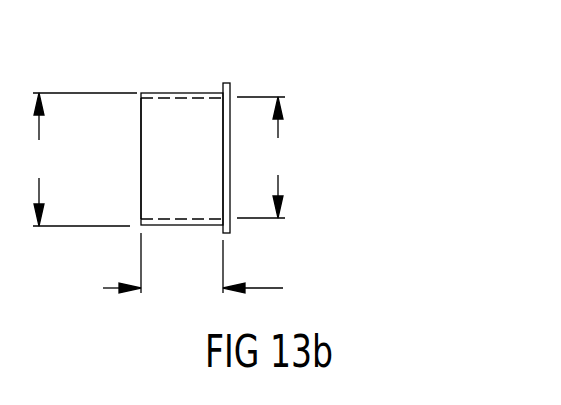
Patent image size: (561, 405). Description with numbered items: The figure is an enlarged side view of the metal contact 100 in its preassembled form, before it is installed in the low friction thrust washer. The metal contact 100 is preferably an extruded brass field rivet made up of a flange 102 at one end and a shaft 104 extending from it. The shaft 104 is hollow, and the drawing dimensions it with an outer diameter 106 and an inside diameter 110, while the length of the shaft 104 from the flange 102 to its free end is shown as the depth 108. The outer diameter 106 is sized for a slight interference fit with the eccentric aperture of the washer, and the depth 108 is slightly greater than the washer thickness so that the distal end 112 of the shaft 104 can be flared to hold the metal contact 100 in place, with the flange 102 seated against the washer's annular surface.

The metal contact 100 is at (313, 110).
The flange 102 is at (229, 83).
The shaft 104 is at (173, 122).
The outer diameter 106 is at (78, 159).
The depth 108 is at (214, 268).
The inside diameter 110 is at (267, 157).
The distal end 112 is at (140, 135).